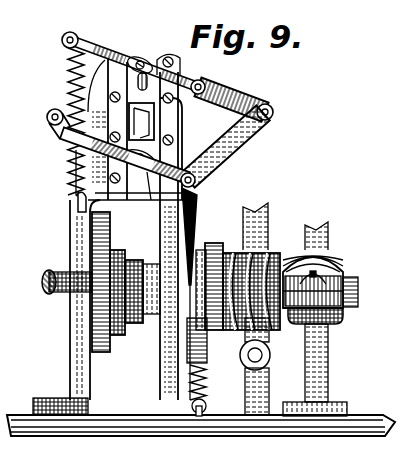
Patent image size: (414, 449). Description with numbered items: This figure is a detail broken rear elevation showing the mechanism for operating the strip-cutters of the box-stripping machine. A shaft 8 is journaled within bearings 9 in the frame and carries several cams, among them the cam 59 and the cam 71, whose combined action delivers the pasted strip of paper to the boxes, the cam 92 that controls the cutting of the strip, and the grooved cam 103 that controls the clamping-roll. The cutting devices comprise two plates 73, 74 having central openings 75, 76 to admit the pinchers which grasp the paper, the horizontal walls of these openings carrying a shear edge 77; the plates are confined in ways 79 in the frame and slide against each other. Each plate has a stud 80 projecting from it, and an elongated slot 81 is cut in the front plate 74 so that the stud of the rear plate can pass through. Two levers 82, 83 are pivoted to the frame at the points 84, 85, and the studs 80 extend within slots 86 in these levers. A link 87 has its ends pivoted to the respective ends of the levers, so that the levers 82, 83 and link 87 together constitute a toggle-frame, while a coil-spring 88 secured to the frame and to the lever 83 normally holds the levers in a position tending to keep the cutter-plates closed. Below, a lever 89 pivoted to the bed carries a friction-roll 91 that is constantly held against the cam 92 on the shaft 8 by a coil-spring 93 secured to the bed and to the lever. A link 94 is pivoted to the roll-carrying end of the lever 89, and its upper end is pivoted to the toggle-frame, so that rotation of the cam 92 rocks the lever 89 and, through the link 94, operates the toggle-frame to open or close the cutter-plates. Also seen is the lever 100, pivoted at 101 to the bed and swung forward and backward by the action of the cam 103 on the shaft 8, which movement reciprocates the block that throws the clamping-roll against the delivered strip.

The shaft 8 is at (49, 296).
The bearings 9 is at (343, 270).
The cam 59 is at (116, 248).
The cam 71 is at (120, 337).
The plate 73 is at (180, 101).
The front plate 74 is at (147, 180).
The central opening 75 is at (205, 179).
The central opening 76 is at (192, 144).
The shear edge 77 is at (209, 108).
The ways 79 is at (170, 131).
The stud 80 is at (141, 60).
The elongated slot 81 is at (174, 70).
The lever 82 is at (70, 166).
The lever 83 is at (100, 58).
The pivot point 84 is at (47, 118).
The pivot point 85 is at (220, 86).
The slots 86 is at (78, 195).
The link 87 is at (238, 143).
The coil-spring 88 is at (66, 68).
The lever 89 is at (193, 350).
The friction-roll 91 is at (206, 372).
The cam 92 is at (214, 250).
The coil-spring 93 is at (206, 398).
The link 94 is at (192, 205).
The lever 100 is at (276, 208).
The pivot 101 is at (262, 353).
The cam 103 is at (300, 318).